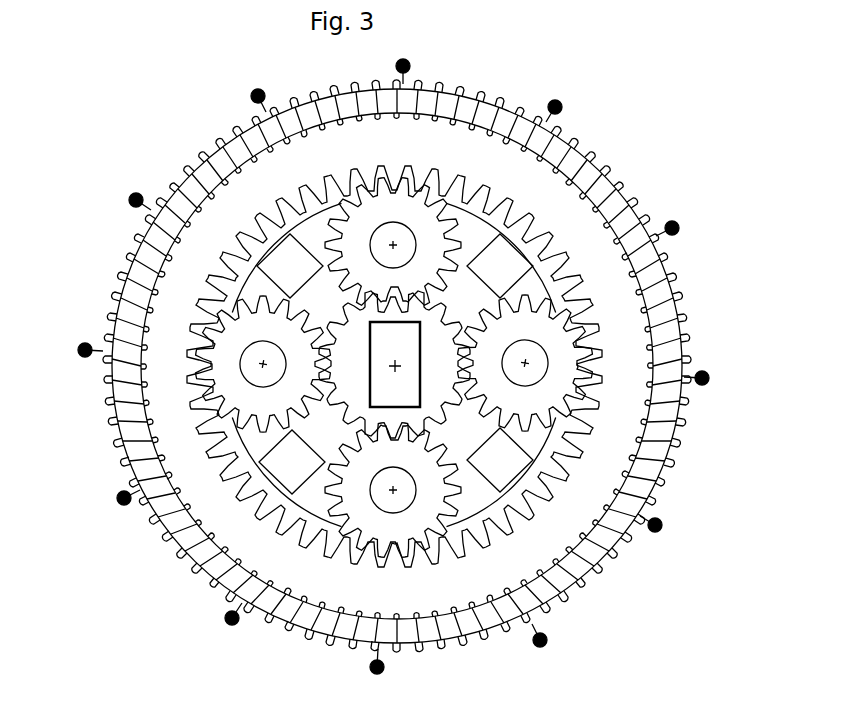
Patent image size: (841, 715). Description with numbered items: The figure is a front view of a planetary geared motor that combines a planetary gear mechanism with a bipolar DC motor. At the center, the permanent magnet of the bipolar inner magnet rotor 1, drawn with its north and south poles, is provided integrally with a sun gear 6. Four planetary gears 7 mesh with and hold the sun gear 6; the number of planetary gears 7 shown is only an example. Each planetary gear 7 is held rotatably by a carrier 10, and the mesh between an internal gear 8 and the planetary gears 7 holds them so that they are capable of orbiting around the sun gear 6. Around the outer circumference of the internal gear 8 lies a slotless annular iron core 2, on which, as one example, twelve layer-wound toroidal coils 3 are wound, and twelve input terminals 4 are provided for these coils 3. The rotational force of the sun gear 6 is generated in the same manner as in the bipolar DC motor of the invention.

The bipolar inner magnet rotor 1 is at (407, 358).
The slotless annular iron core 2 is at (217, 165).
The layer-wound toroidal coils 3 is at (318, 83).
The input terminals 4 is at (410, 64).
The sun gear 6 is at (430, 363).
The planetary gears 7 is at (418, 218).
The internal gear 8 is at (180, 295).
The carrier 10 is at (287, 465).